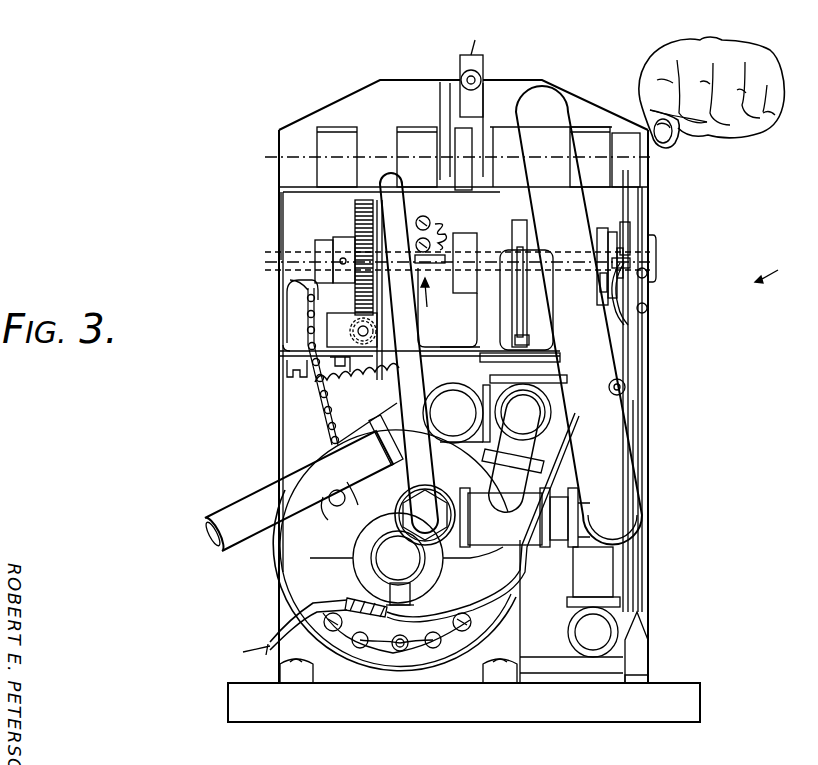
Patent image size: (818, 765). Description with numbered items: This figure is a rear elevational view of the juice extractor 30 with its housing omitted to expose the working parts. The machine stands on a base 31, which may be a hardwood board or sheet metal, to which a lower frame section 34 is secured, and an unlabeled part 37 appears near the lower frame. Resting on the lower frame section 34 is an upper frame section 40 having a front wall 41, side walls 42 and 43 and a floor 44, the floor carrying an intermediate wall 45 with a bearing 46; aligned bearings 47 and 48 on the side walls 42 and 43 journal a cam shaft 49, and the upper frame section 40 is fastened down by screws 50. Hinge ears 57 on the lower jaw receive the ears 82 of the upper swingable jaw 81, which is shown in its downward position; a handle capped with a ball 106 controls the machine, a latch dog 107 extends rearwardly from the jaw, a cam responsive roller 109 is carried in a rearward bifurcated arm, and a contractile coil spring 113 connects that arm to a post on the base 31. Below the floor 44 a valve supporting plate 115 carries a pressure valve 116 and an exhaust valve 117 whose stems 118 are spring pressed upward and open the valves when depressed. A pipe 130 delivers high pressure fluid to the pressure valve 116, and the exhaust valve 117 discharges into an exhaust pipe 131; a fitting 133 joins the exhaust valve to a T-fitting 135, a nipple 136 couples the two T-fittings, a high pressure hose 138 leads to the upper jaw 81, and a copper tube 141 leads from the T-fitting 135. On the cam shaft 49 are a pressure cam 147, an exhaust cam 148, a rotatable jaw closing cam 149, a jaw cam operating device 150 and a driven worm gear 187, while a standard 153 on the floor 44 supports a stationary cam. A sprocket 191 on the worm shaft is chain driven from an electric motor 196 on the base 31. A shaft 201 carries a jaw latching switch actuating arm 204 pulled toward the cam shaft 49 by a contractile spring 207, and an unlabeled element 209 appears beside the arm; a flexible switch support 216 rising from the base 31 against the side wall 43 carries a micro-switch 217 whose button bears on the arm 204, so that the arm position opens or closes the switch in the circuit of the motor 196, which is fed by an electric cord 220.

The juice extractor 30 is at (781, 267).
The base 31 is at (697, 701).
The lower frame section 34 is at (277, 446).
The horizontal partition 37 is at (290, 362).
The upper frame section 40 is at (278, 300).
The front wall 41 is at (295, 312).
The side wall 42 is at (283, 203).
The side wall 43 is at (648, 216).
The floor 44 is at (447, 353).
The intermediate wall 45 is at (485, 305).
The bearing 46 is at (487, 231).
The bearing 47 is at (293, 240).
The bearing 48 is at (656, 244).
The cam shaft 49 is at (278, 267).
The screws 50 is at (290, 374).
The hinge ears 57 is at (328, 151).
The upper swingable jaw 81 is at (345, 108).
The ears 82 is at (377, 145).
The ball 106 is at (635, 118).
The latch dog 107 is at (633, 176).
The cam responsive roller 109 is at (460, 149).
The contractile coil spring 113 is at (480, 72).
The valve supporting plate 115 is at (553, 378).
The pressure valve 116 is at (548, 420).
The exhaust valve 117 is at (553, 393).
The stems 118 is at (530, 337).
The pipe 130 is at (570, 628).
The exhaust pipe 131 is at (235, 508).
The fitting 133 is at (510, 469).
The T-fitting 135 is at (512, 530).
The nipple 136 is at (562, 530).
The high pressure hose 138 is at (613, 440).
The copper tube 141 is at (400, 497).
The pressure cam 147 is at (596, 233).
The exhaust cam 148 is at (520, 231).
The jaw closing cam 149 is at (463, 232).
The jaw cam operating device 150 is at (437, 300).
The standard 153 is at (383, 360).
The driven worm gear 187 is at (349, 212).
The sprocket 191 is at (300, 328).
The electric motor 196 is at (293, 563).
The shaft 201 is at (543, 663).
The jaw latching switch actuating arm 204 is at (627, 202).
The contractile spring 207 is at (630, 393).
The pin 209 is at (630, 262).
The flexible switch support 216 is at (635, 563).
The micro-switch 217 is at (628, 300).
The electric cord 220 is at (267, 640).